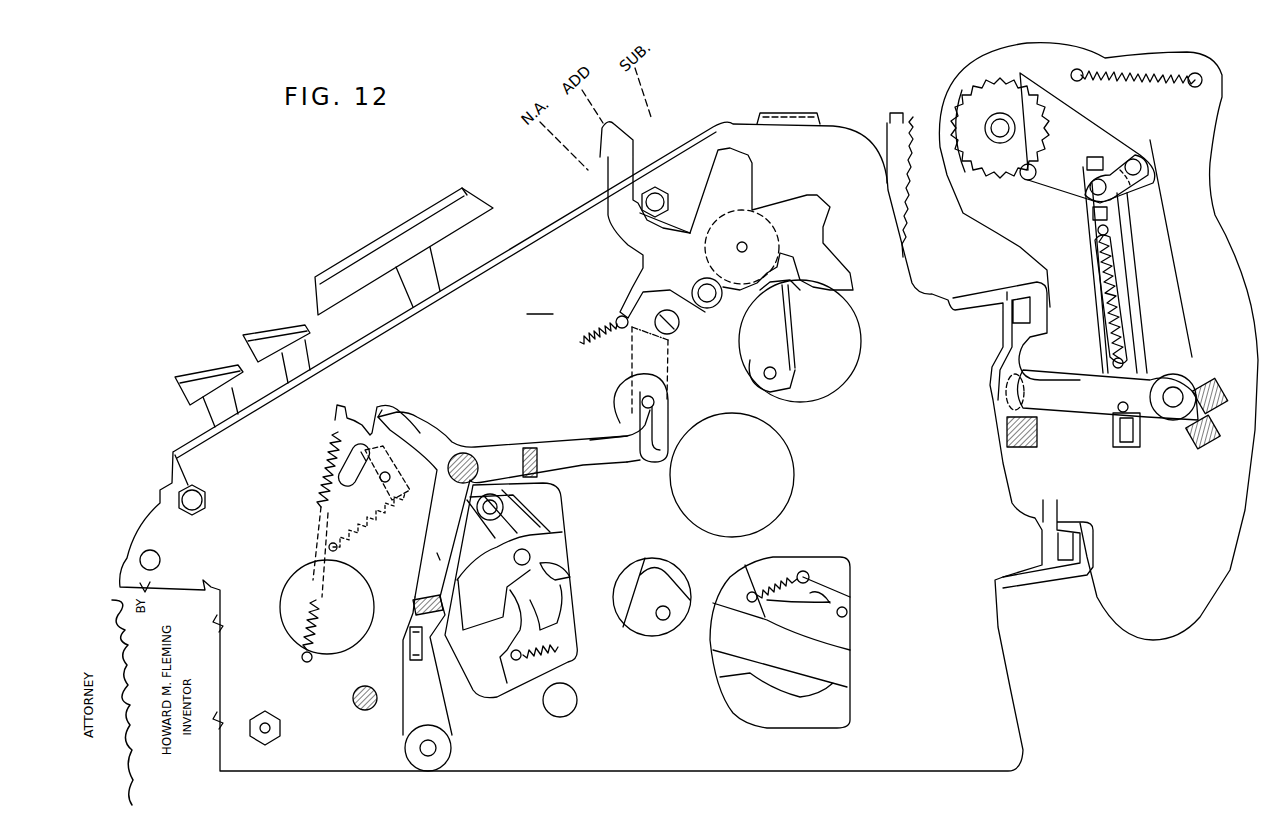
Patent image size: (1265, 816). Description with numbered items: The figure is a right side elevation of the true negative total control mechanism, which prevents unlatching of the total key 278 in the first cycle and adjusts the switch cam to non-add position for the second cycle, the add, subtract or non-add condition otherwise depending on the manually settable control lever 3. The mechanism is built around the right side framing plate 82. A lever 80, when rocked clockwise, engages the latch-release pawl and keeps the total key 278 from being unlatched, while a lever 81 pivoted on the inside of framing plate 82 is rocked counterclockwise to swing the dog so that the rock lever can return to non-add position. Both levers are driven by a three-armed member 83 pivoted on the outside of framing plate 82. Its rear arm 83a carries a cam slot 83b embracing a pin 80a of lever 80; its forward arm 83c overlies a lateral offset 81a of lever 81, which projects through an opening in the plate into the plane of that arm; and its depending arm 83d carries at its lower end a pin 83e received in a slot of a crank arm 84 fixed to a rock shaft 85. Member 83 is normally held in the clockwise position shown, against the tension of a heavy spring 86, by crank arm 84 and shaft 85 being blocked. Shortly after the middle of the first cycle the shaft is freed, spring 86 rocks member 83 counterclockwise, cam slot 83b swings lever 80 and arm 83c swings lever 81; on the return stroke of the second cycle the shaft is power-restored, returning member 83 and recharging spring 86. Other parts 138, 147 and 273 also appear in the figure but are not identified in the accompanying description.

The control lever 3 is at (618, 177).
The lever 80 is at (660, 373).
The pin 80a is at (654, 402).
The lever 81 is at (377, 450).
The lateral offset 81a is at (335, 457).
The right side framing plate 82 is at (606, 442).
The three-armed member 83 is at (513, 505).
The rear arm 83a is at (567, 452).
The cam slot 83b is at (657, 443).
The forward arm 83c is at (420, 437).
The depending arm 83d is at (437, 553).
The pin 83e is at (408, 652).
The crank arm 84 is at (423, 712).
The rock shaft 85 is at (433, 747).
The spring 86 is at (323, 490).
The key 138 is at (374, 260).
The pawl 147 is at (800, 332).
The key 273 is at (262, 340).
The total key 278 is at (197, 383).